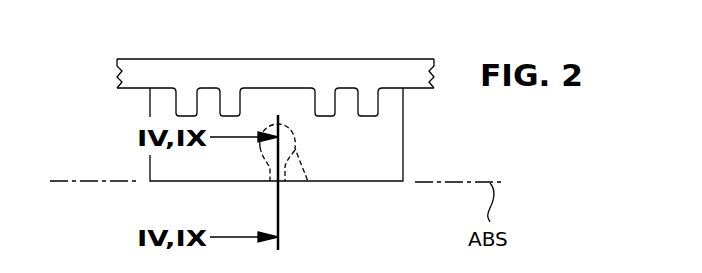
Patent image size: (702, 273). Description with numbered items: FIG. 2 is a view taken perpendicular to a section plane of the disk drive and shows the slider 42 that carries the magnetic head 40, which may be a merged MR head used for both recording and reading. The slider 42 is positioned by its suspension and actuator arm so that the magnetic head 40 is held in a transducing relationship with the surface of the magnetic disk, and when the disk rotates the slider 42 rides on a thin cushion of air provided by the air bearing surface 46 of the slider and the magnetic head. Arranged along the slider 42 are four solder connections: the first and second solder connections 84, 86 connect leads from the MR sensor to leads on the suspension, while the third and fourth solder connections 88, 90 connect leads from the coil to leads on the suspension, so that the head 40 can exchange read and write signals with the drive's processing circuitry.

The magnetic head 40 is at (308, 182).
The slider 42 is at (150, 108).
The air bearing surface 46 is at (177, 182).
The first solder connection 84 is at (228, 96).
The second solder connection 86 is at (325, 97).
The third solder connection 88 is at (187, 96).
The fourth solder connection 90 is at (368, 97).